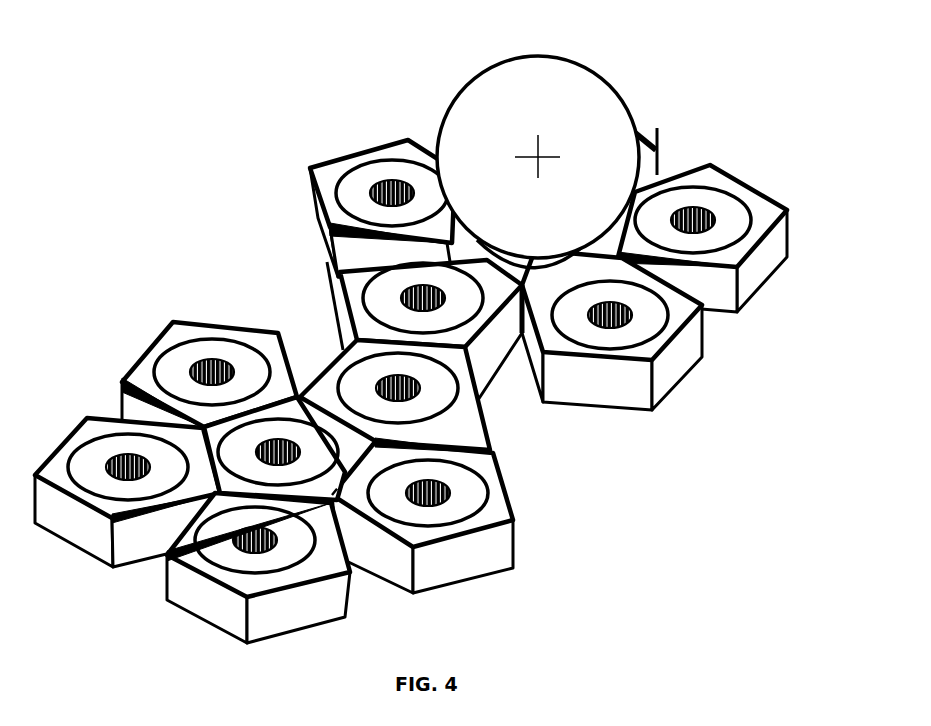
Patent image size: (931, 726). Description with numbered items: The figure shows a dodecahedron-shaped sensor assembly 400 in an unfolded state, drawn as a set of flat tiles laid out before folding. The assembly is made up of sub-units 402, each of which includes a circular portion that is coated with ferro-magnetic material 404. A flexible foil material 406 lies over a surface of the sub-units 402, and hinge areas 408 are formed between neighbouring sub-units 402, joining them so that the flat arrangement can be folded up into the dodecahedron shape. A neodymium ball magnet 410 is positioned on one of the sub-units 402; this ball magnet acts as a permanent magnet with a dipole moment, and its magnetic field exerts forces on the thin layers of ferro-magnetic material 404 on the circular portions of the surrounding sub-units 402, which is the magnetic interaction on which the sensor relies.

The dodecahedron-shaped sensor assembly 400 is at (188, 132).
The sub-units 402 is at (530, 505).
The ferro-magnetic material 404 is at (710, 240).
The flexible foil material 406 is at (158, 337).
The hinge areas 408 is at (353, 488).
The neodymium ball magnet 410 is at (548, 148).